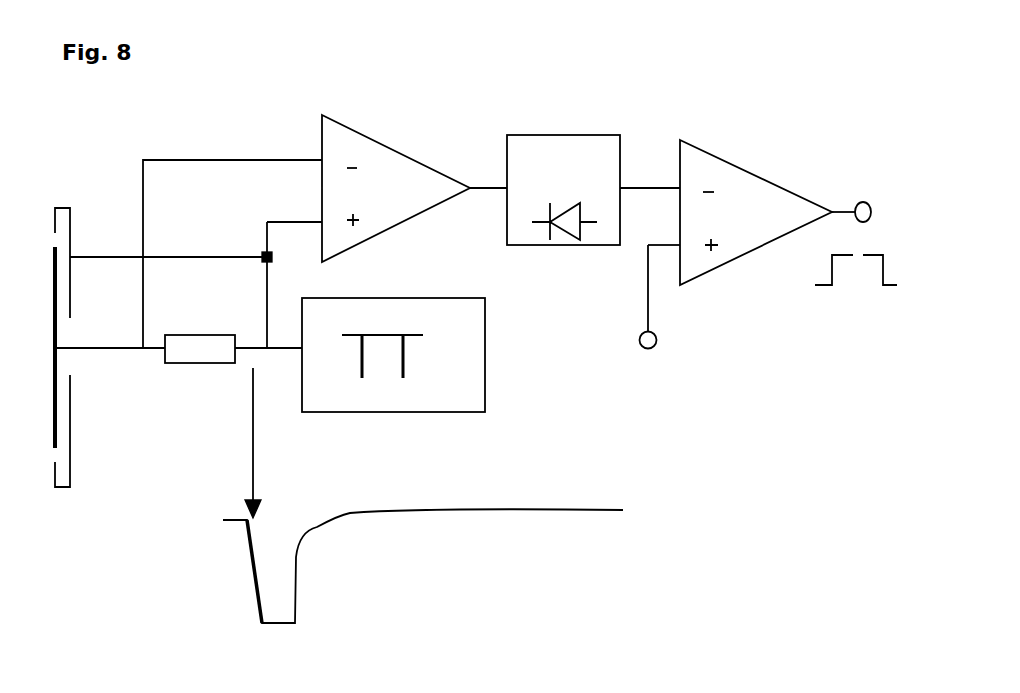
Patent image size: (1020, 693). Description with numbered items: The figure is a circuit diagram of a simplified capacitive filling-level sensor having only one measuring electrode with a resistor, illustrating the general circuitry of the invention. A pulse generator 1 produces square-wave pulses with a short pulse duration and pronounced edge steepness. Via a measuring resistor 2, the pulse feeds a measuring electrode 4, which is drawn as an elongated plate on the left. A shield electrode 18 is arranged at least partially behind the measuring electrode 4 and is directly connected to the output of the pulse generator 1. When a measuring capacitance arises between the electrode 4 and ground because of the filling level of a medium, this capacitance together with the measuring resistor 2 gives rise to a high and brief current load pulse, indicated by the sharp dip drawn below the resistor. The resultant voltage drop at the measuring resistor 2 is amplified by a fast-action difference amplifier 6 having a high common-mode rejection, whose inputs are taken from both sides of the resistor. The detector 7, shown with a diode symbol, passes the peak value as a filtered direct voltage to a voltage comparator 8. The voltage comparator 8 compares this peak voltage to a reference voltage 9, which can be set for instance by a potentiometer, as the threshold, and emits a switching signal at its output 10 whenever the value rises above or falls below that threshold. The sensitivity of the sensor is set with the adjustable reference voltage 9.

The pulse generator 1 is at (393, 355).
The measuring resistor 2 is at (200, 349).
The measuring electrode 4 is at (34, 347).
The difference amplifier 6 is at (396, 188).
The detector 7 is at (563, 190).
The voltage comparator 8 is at (740, 212).
The reference voltage 9 is at (649, 328).
The output 10 is at (869, 187).
The shield electrode 18 is at (72, 232).